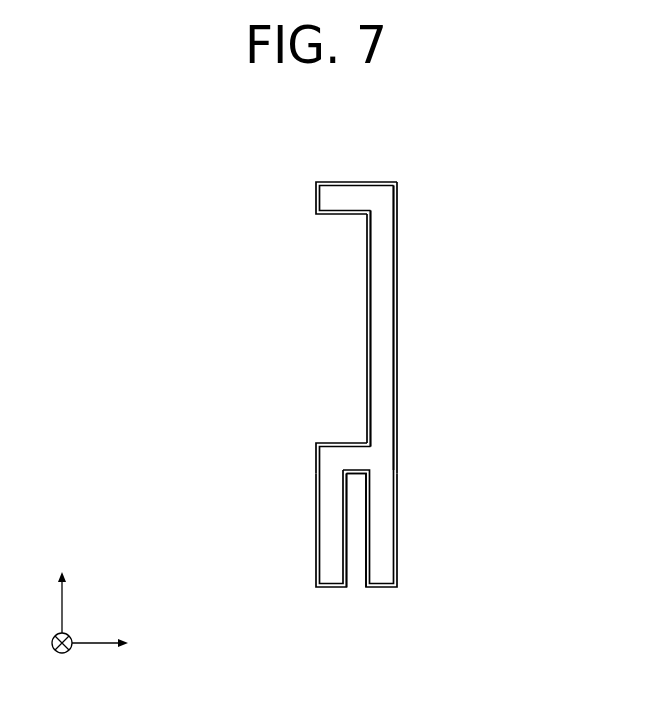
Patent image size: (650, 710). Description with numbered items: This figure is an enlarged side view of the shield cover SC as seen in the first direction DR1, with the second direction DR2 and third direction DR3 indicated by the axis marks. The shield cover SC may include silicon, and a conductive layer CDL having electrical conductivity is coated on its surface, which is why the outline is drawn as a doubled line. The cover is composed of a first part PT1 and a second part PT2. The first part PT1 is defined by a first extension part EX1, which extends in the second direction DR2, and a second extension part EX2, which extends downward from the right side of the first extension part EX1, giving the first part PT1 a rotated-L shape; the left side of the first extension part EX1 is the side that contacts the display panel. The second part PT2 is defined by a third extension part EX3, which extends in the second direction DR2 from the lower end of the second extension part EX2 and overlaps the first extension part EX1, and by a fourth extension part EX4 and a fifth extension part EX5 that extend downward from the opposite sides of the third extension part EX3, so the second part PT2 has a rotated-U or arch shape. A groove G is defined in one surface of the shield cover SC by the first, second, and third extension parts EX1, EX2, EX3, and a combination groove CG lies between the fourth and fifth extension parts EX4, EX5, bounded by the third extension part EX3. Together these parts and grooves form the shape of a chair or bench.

The conductive layer CDL is at (371, 182).
The shield cover SC is at (174, 252).
The first part PT1 is at (228, 203).
The second part PT2 is at (228, 435).
The first extension part EX1 is at (334, 202).
The second extension part EX2 is at (381, 312).
The third extension part EX3 is at (344, 454).
The fourth extension part EX4 is at (327, 509).
The fifth extension part EX5 is at (380, 553).
The groove G is at (346, 374).
The combination groove CG is at (358, 515).
The first direction DR1 is at (61, 658).
The second direction DR2 is at (120, 644).
The third direction DR3 is at (61, 589).